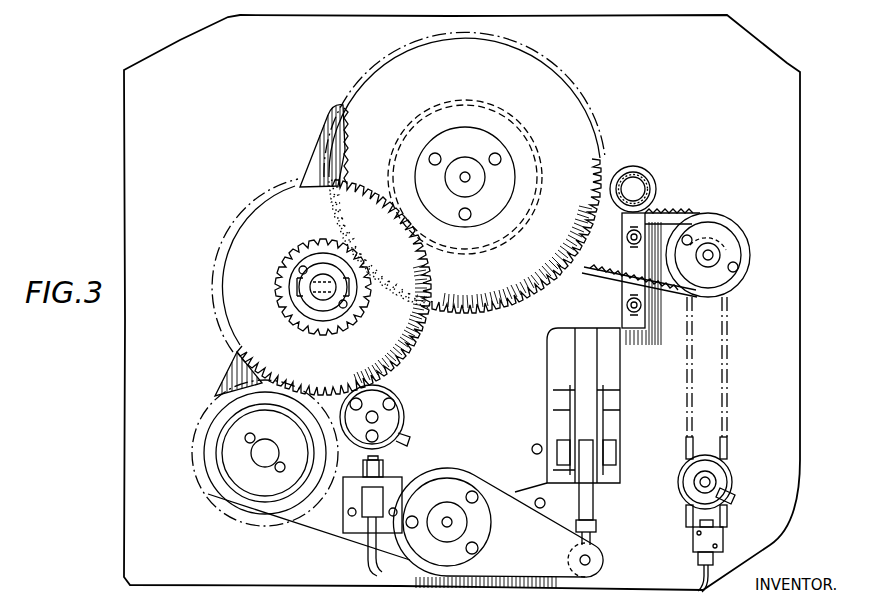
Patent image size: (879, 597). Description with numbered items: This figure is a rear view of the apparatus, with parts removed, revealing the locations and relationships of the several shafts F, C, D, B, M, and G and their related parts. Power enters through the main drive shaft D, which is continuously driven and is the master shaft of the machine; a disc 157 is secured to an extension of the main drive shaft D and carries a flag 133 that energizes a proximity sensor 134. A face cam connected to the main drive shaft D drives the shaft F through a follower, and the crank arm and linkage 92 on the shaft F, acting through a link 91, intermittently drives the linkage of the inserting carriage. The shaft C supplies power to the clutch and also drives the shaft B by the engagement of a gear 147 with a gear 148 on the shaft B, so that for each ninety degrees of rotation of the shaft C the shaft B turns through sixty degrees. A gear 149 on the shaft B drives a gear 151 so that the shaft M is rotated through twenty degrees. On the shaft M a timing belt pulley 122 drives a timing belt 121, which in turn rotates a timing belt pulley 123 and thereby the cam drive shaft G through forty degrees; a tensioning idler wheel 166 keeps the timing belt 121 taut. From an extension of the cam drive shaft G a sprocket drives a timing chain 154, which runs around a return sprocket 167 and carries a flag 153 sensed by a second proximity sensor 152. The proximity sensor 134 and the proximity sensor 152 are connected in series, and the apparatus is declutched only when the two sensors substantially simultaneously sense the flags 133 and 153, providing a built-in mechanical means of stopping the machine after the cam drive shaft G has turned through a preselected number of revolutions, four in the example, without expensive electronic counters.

The gear 148 is at (310, 193).
The gear 151 is at (353, 137).
The gear 149 is at (313, 256).
The shaft B is at (323, 298).
The shaft M is at (466, 176).
The timing belt pulley 122 is at (515, 216).
The tensioning idler wheel 166 is at (648, 180).
The timing belt 121 is at (673, 212).
The timing belt pulley 123 is at (725, 222).
The cam drive shaft G is at (712, 255).
The timing chain 154 is at (728, 440).
The return sprocket 167 is at (722, 470).
The flag 153 is at (735, 496).
The proximity sensor 152 is at (712, 540).
The gear 147 is at (250, 376).
The shaft C is at (267, 450).
The disc 157 is at (398, 400).
The main drive shaft D is at (378, 417).
The flag 133 is at (410, 440).
The proximity sensor 134 is at (385, 470).
The crank arm and linkage 92 is at (490, 492).
The shaft F is at (452, 522).
The link 91 is at (598, 440).